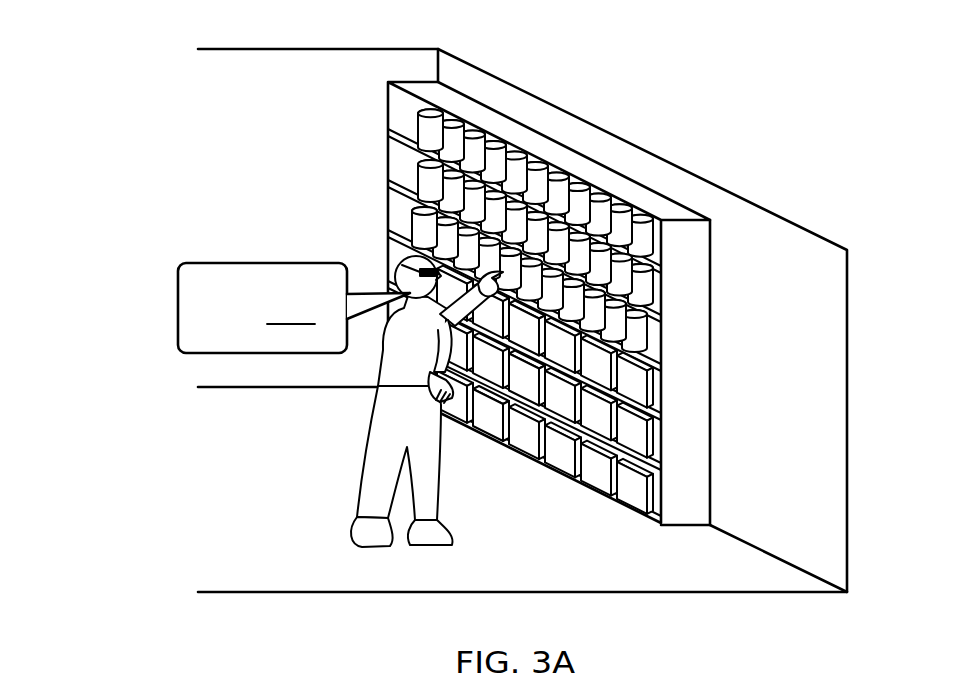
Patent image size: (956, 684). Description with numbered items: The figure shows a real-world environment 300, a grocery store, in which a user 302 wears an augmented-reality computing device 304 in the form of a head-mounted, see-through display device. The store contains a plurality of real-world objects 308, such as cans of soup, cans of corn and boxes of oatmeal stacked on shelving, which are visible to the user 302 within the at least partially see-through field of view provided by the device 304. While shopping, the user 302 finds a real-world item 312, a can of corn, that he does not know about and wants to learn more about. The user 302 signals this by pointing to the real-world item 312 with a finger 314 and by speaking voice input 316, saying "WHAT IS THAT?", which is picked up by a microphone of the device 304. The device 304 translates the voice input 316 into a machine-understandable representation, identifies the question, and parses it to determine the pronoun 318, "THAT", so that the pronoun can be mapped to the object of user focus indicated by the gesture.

The real-world environment 300 is at (681, 132).
The user 302 is at (408, 357).
The augmented-reality computing device 304 is at (400, 257).
The real-world objects 308 is at (381, 153).
The real-world item 312 is at (411, 246).
The finger 314 is at (447, 262).
The voice input 316 is at (294, 312).
The pronoun 318 is at (274, 336).